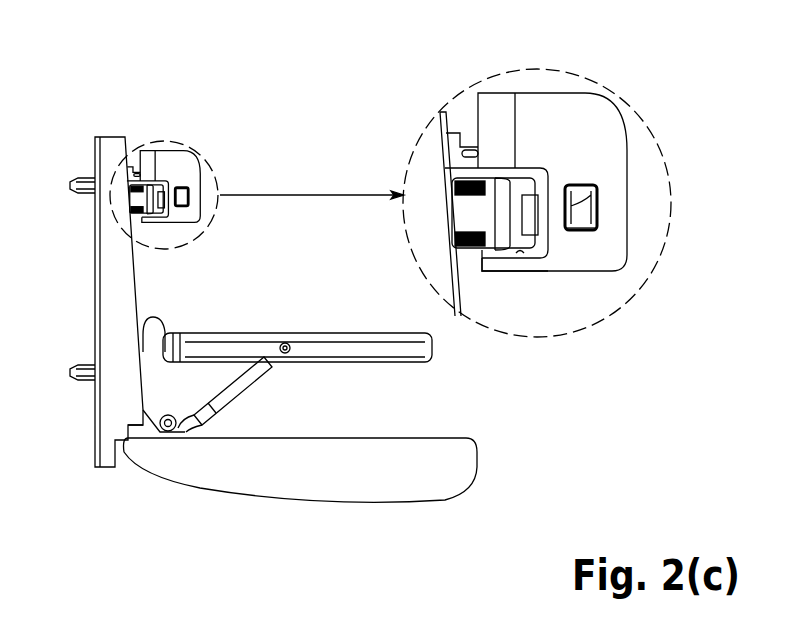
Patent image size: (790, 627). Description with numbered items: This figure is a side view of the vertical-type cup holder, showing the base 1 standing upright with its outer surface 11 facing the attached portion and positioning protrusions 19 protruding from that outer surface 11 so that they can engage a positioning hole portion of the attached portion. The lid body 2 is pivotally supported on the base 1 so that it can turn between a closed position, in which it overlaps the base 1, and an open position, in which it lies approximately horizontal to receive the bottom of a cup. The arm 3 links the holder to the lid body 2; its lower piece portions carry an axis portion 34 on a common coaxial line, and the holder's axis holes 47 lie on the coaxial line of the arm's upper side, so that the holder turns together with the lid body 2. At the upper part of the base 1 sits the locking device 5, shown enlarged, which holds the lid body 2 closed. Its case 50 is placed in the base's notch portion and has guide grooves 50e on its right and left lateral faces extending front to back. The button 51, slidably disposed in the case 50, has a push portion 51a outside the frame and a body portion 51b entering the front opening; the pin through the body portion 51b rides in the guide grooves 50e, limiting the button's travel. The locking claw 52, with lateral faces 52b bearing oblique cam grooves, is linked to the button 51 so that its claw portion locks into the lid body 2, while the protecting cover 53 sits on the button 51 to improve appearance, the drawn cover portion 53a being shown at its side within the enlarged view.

The base 1 is at (297, 340).
The lid body 2 is at (477, 470).
The arm 3 is at (227, 400).
The locking device 5 is at (190, 150).
The outer surface 11 is at (95, 257).
The positioning protrusions 19 is at (72, 187).
The axis portion 34 is at (185, 432).
The axis holes 47 is at (298, 352).
The case 50 is at (455, 142).
The guide grooves 50e is at (477, 137).
The button 51 is at (535, 185).
The push portion 51a is at (512, 250).
The body portion 51b is at (573, 233).
The locking claw 52 is at (488, 212).
The lateral faces 52b is at (455, 179).
The protecting cover 53 is at (573, 113).
The cover guide portion 53a is at (577, 195).